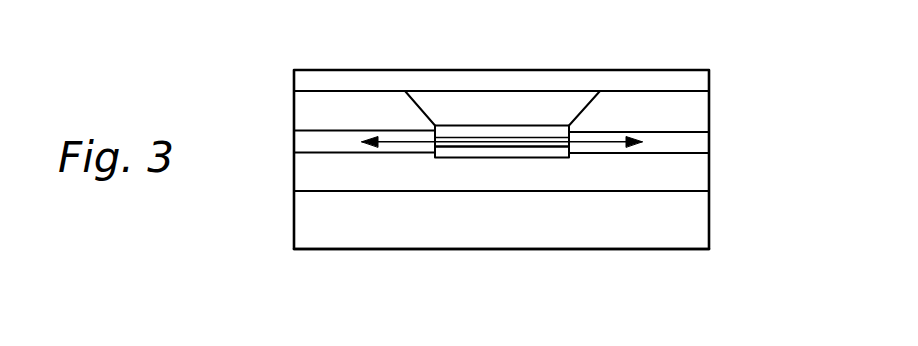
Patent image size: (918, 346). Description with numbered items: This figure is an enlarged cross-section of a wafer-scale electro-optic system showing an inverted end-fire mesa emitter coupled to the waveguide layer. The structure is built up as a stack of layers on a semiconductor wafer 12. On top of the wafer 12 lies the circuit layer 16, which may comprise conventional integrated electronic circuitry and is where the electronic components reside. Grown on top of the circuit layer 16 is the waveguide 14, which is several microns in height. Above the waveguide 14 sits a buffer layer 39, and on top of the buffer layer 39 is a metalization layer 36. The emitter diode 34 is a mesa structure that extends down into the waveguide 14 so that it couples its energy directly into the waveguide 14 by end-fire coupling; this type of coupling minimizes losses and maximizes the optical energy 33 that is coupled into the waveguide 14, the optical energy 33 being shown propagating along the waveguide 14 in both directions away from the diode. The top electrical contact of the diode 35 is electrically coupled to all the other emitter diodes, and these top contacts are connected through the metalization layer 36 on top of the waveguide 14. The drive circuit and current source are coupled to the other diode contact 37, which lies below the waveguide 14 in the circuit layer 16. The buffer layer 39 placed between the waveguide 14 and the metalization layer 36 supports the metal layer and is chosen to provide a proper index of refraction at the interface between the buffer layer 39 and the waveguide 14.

The semiconductor wafer 12 is at (710, 220).
The waveguide 14 is at (710, 140).
The circuit layer 16 is at (710, 173).
The optical energy 33 is at (392, 142).
The emitter diode 34 is at (500, 137).
The top electrical contact of the diode 35 is at (443, 93).
The metalization layer 36 is at (360, 69).
The other diode contact 37 is at (527, 157).
The buffer layer 39 is at (710, 108).